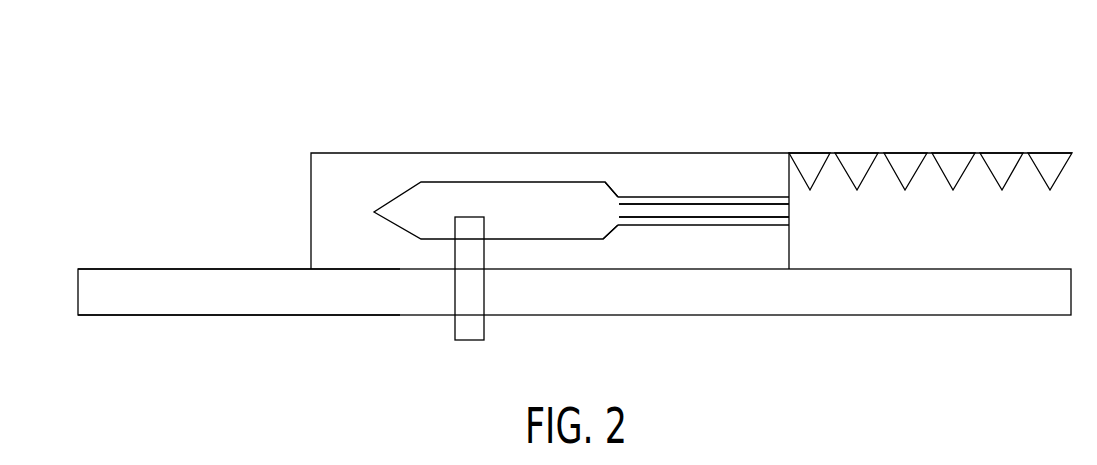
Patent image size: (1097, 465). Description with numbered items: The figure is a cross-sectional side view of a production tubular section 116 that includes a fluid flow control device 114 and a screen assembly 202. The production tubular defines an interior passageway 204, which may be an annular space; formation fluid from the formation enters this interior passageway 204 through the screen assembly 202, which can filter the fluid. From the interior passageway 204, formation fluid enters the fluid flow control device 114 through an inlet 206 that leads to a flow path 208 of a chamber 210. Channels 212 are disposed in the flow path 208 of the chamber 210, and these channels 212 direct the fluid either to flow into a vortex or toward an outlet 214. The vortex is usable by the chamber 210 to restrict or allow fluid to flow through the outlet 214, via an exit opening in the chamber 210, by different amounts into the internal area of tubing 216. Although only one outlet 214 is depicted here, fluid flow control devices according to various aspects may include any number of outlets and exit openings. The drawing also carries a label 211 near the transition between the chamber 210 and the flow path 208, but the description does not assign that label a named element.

The fluid flow control device 114 is at (530, 135).
The production tubular section 116 is at (749, 92).
The screen assembly 202 is at (925, 153).
The interior passageway 204 is at (920, 257).
The inlet 206 is at (789, 208).
The flow path 208 is at (737, 212).
The chamber 210 is at (540, 196).
The taper 211 is at (602, 198).
The channels 212 is at (677, 203).
The outlet 214 is at (452, 328).
The tubing 216 is at (131, 298).